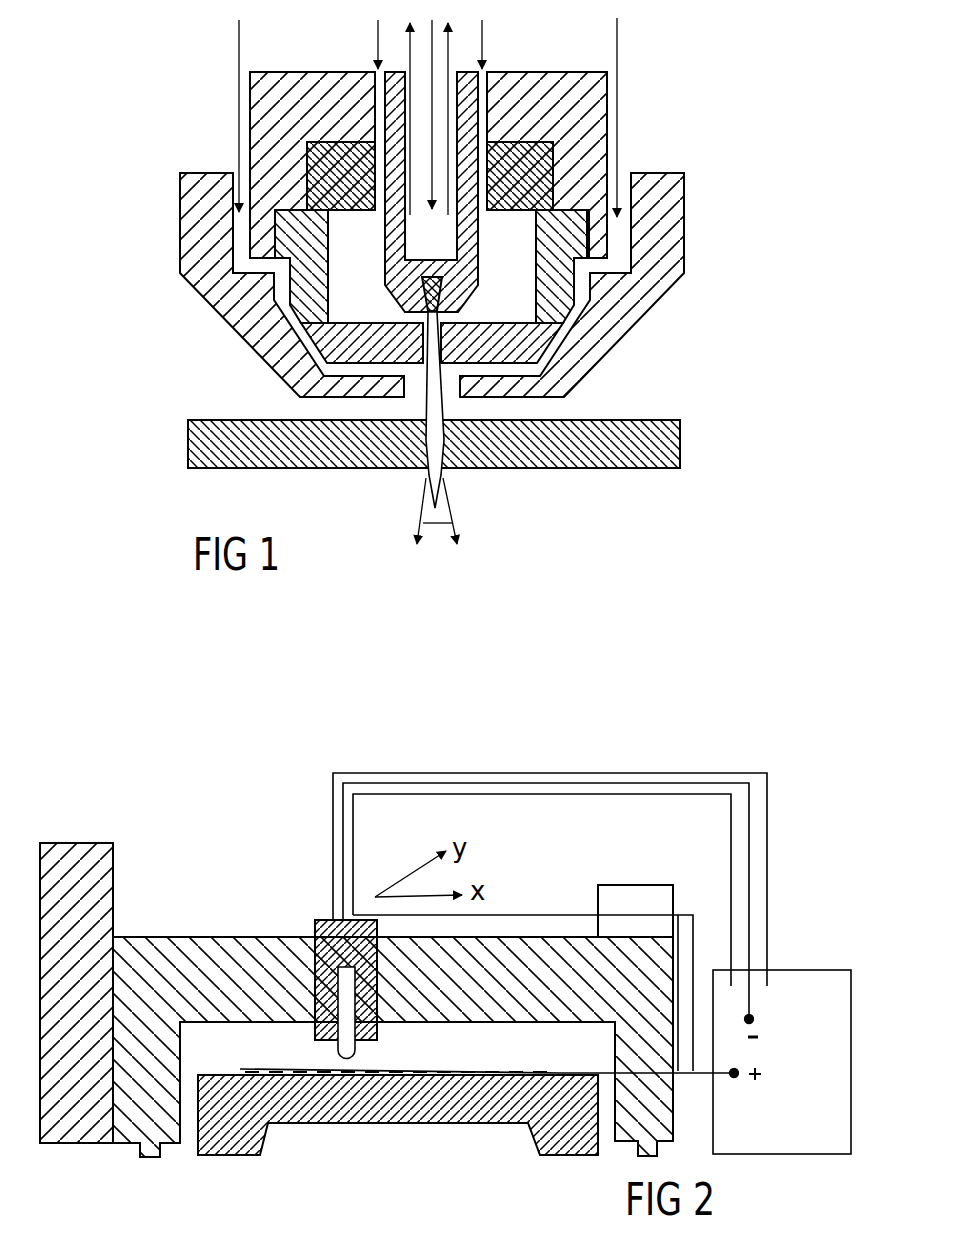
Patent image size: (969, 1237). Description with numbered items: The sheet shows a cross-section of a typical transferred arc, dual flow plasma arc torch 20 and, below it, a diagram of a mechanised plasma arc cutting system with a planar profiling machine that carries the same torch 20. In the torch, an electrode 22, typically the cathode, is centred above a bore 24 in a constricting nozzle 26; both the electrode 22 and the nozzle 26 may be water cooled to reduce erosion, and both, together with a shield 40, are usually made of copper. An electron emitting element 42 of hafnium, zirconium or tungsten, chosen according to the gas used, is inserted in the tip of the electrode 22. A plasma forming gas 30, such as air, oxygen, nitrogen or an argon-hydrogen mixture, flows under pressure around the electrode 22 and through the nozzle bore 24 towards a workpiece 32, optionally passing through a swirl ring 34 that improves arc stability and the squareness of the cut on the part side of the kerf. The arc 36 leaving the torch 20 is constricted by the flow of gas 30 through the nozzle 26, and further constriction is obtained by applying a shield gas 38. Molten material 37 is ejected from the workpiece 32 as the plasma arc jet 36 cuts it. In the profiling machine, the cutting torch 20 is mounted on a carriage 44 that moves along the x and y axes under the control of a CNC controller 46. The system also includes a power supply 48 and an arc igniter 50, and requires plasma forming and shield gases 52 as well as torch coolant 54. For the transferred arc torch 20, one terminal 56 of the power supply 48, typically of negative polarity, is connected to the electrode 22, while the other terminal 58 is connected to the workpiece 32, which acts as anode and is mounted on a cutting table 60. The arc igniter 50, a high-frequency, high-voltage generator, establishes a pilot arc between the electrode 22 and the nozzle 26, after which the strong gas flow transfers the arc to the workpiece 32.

In FIG. 1, the plasma arc torch 20 is at (428, 205).
In FIG. 2, the plasma arc torch 20 is at (393, 1034).
In FIG. 1, the electrode 22 is at (385, 265).
In FIG. 1, the bore 24 is at (445, 318).
In FIG. 1, the constricting nozzle 26 is at (292, 229).
In FIG. 1, the plasma forming gas 30 is at (483, 45).
In FIG. 1, the workpiece 32 is at (570, 445).
In FIG. 2, the workpiece 32 is at (302, 1062).
In FIG. 1, the swirl ring 34 is at (337, 170).
In FIG. 1, the arc 36 is at (430, 410).
In FIG. 1, the molten material 37 is at (455, 506).
In FIG. 1, the shield gas 38 is at (237, 38).
In FIG. 1, the shield 40 is at (300, 378).
In FIG. 1, the electron emitting element 42 is at (420, 295).
In FIG. 2, the carriage 44 is at (203, 980).
In FIG. 2, the CNC controller 46 is at (70, 863).
In FIG. 2, the power supply 48 is at (801, 984).
In FIG. 2, the arc igniter 50 is at (638, 905).
In FIG. 2, the plasma forming and shield gases 52 is at (585, 773).
In FIG. 2, the torch coolant 54 is at (658, 794).
In FIG. 2, the terminal 56 is at (752, 1019).
In FIG. 2, the terminal 58 is at (734, 1075).
In FIG. 2, the cutting table 60 is at (482, 1095).